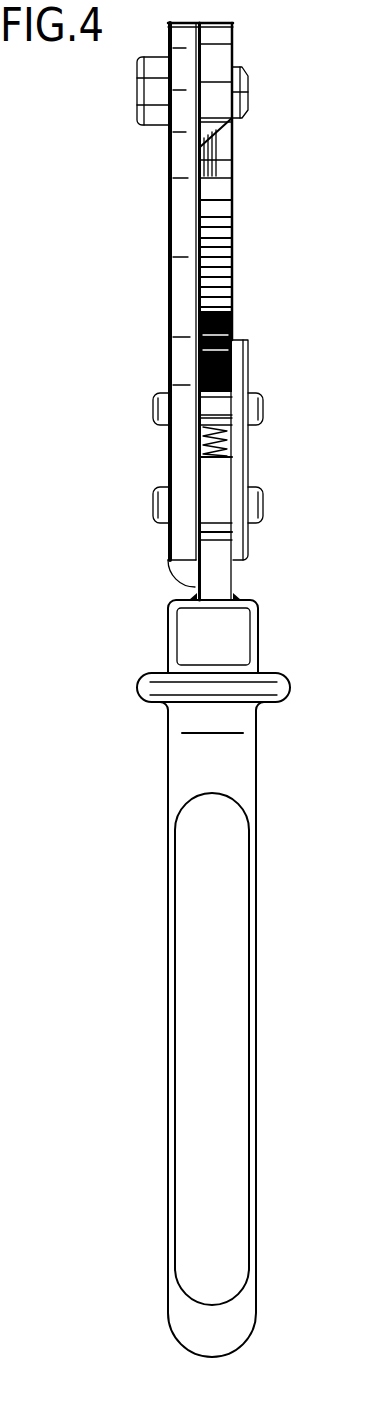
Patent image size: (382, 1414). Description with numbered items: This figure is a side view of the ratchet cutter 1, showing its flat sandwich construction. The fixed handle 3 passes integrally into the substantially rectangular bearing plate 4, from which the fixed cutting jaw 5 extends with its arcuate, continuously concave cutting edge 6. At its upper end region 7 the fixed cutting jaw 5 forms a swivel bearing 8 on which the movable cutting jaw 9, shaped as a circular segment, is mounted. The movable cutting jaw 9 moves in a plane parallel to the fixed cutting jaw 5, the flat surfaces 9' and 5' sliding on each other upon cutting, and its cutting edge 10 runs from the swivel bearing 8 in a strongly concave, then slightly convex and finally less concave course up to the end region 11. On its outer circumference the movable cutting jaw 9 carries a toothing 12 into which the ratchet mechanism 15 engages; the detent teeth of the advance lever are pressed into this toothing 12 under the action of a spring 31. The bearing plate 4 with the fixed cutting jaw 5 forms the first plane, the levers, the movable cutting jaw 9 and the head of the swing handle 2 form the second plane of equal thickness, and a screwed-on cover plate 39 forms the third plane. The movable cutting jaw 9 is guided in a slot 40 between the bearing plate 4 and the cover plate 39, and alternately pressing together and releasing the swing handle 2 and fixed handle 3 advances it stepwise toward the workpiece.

The ratchet cutter 1 is at (92, 495).
The swing handle 2 is at (190, 921).
The fixed handle 3 is at (185, 572).
The bearing plate 4 is at (180, 387).
The fixed cutting jaw 5 is at (148, 291).
The flat surface 5' is at (132, 311).
The cutting edge 6 is at (183, 332).
The upper end region 7 is at (222, 55).
The swivel bearing 8 is at (248, 93).
The movable cutting jaw 9 is at (266, 231).
The flat surface 9' is at (269, 310).
The cutting edge 10 is at (233, 275).
The end region 11 is at (218, 185).
The toothing 12 is at (235, 318).
The ratchet mechanism 15 is at (180, 450).
The spring 31 is at (222, 430).
The cover plate 39 is at (237, 465).
The slot 40 is at (233, 377).